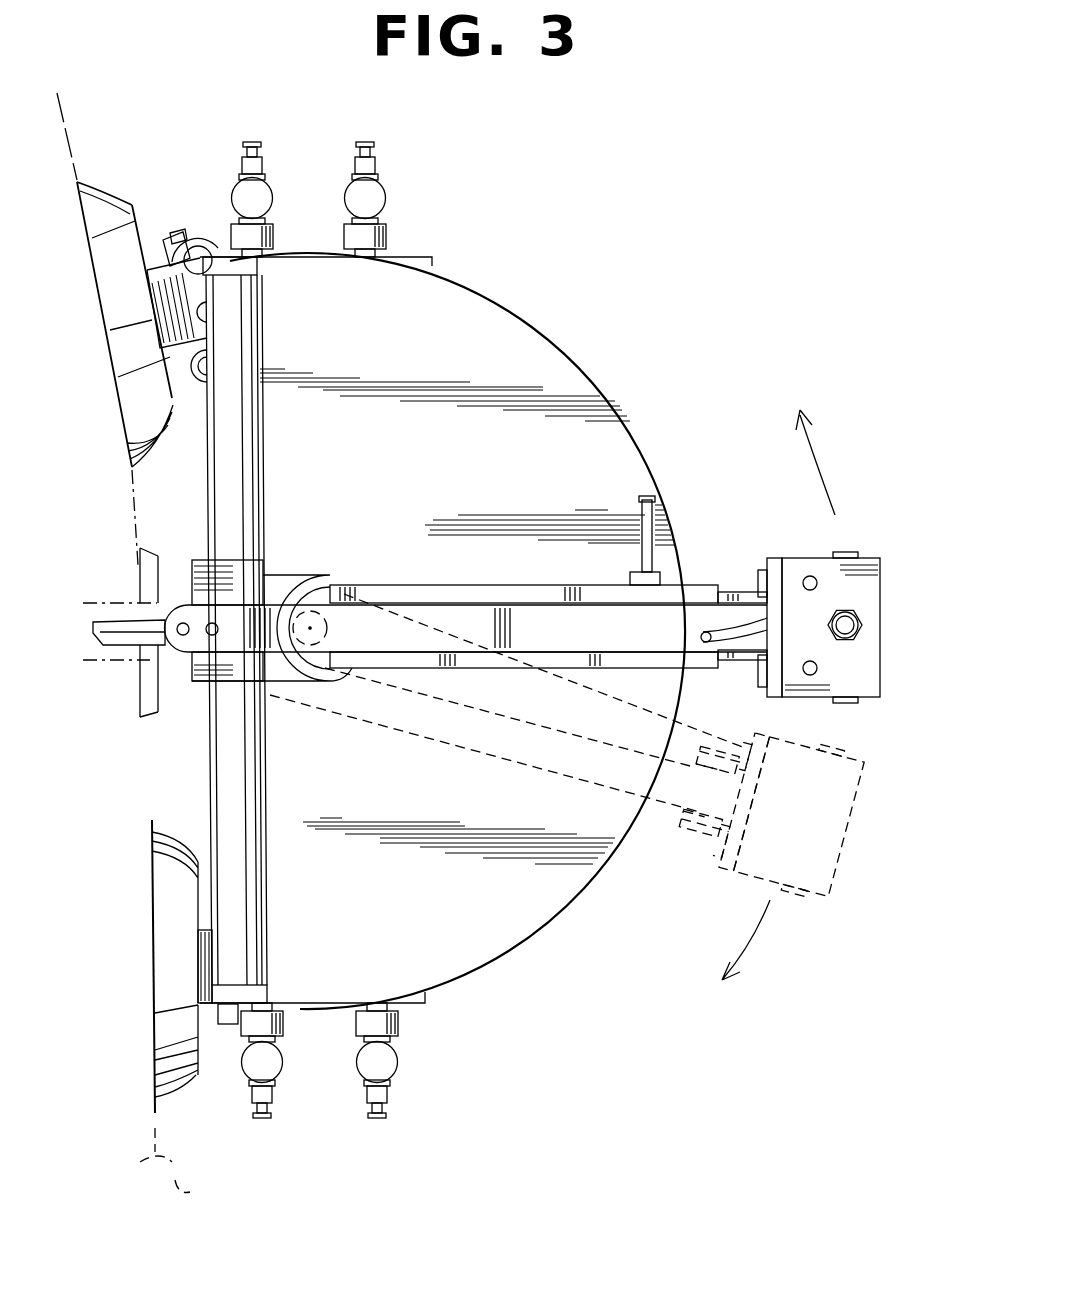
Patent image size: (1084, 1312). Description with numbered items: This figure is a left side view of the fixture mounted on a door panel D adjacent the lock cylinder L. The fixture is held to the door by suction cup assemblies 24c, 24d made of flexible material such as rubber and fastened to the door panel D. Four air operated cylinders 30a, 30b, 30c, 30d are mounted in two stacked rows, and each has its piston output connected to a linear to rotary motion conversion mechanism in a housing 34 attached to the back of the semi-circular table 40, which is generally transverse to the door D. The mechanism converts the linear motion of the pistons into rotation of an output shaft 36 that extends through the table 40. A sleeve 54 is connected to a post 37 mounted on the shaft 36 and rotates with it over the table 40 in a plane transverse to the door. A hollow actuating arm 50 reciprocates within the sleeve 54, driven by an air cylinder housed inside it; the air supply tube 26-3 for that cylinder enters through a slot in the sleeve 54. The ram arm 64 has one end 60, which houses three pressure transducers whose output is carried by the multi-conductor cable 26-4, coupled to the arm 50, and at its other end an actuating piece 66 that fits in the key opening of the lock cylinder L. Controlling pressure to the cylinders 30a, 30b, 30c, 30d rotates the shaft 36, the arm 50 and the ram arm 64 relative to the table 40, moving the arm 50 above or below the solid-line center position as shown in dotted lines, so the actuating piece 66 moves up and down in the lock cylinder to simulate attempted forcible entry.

The suction cup assembly 24d is at (108, 214).
The suction cup assembly 24c is at (187, 1063).
The air operated cylinder 30a is at (227, 287).
The air operated cylinder 30b is at (262, 970).
The air operated cylinder 30c is at (412, 262).
The air operated cylinder 30d is at (423, 992).
The semi-circular table 40 is at (555, 373).
The output shaft 36 is at (324, 690).
The housing 34 is at (305, 580).
The post 37 is at (393, 593).
The sleeve 54 is at (543, 597).
The actuating arm 50 is at (733, 590).
The end of ram arm 60 is at (857, 595).
The ram arm 64 is at (510, 637).
The air supply tube 26-3 is at (637, 520).
The multi-conductor cable 26-4 is at (707, 615).
The actuating piece 66 is at (122, 620).
The lock cylinder L is at (103, 655).
The door panel D is at (180, 1192).